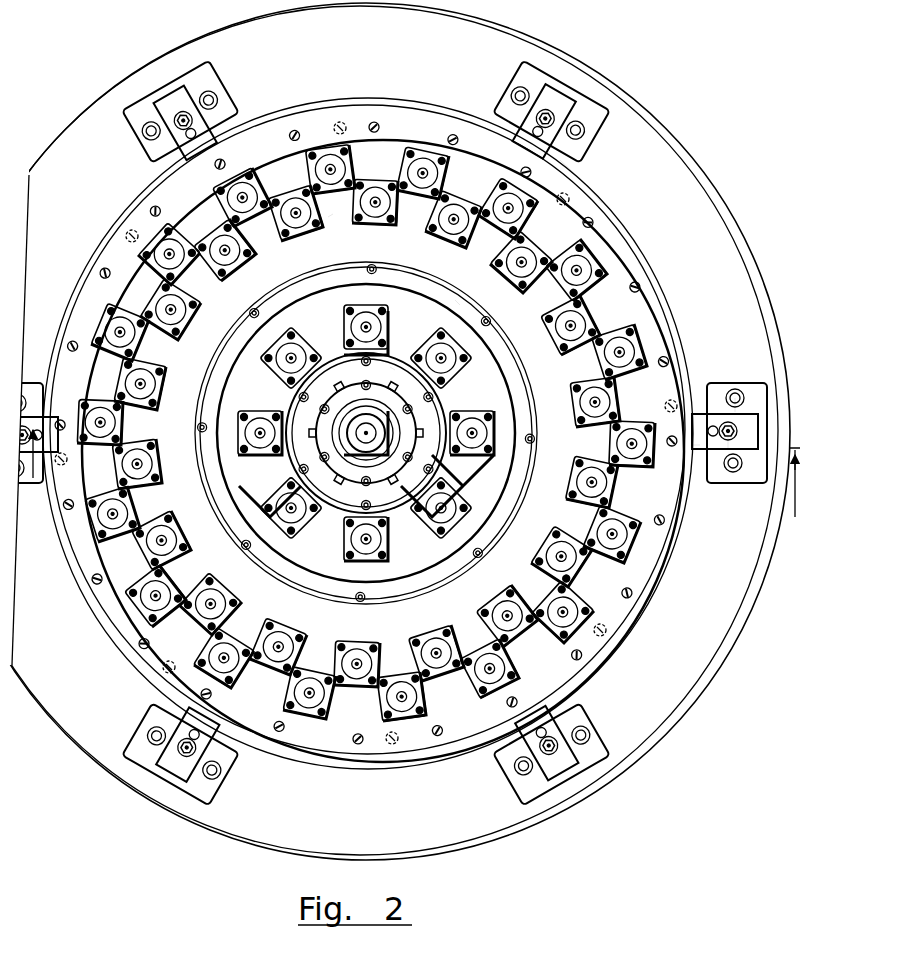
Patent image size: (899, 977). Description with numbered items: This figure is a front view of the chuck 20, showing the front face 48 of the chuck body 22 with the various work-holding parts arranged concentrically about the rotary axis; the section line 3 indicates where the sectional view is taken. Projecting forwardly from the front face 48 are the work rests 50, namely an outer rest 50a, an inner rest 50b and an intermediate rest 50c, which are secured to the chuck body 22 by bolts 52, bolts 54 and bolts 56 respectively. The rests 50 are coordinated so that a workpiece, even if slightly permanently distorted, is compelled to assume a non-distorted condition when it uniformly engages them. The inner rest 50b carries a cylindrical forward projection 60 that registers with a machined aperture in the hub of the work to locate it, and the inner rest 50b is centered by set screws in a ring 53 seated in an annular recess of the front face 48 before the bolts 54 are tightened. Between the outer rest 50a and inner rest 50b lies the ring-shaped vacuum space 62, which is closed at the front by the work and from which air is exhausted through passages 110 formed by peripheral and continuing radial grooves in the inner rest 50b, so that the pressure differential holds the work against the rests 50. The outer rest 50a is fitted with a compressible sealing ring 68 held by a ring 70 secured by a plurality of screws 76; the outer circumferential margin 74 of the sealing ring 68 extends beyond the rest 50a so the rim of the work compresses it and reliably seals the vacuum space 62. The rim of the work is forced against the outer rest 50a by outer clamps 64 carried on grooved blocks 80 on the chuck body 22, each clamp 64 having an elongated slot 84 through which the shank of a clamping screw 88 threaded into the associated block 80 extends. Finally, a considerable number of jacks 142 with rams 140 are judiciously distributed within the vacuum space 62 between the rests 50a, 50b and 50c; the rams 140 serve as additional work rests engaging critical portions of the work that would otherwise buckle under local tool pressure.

The test fixture assembly 20 is at (672, 88).
The chuck body 22 is at (492, 44).
The front face 48 is at (670, 275).
The work rests 50 is at (623, 232).
The outer rest 50a is at (602, 203).
The inner rest 50b is at (388, 368).
The intermediate rest 50c is at (455, 300).
The bolts 52 is at (132, 232).
The ring 53 is at (300, 410).
The bolts 54 is at (343, 384).
The bolts 56 is at (374, 266).
The cylindrical forward projection 60 is at (392, 406).
The vacuum space 62 is at (340, 215).
The outer clamps 64 is at (235, 118).
The sealing ring 68 is at (657, 303).
The ring 70 is at (660, 337).
The outer circumferential margin 74 is at (638, 262).
The screws 76 is at (384, 128).
The grooved blocks 80 is at (215, 72).
The elongated slot 84 is at (222, 92).
The clamping screw 88 is at (190, 108).
The passages 110 is at (298, 352).
The rams 140 is at (330, 168).
The jacks 142 is at (312, 168).
The section line 3- 3 is at (411, 482).